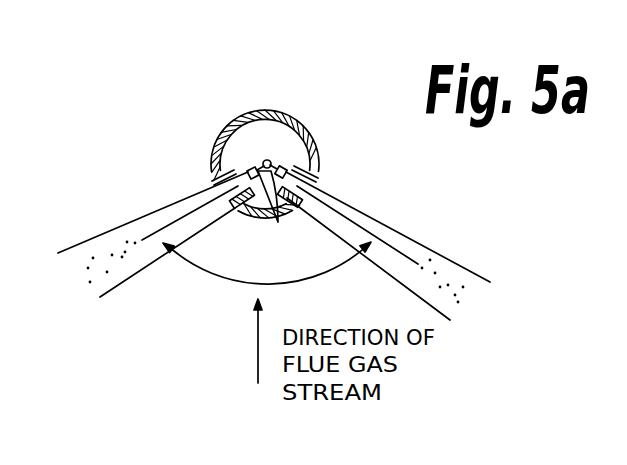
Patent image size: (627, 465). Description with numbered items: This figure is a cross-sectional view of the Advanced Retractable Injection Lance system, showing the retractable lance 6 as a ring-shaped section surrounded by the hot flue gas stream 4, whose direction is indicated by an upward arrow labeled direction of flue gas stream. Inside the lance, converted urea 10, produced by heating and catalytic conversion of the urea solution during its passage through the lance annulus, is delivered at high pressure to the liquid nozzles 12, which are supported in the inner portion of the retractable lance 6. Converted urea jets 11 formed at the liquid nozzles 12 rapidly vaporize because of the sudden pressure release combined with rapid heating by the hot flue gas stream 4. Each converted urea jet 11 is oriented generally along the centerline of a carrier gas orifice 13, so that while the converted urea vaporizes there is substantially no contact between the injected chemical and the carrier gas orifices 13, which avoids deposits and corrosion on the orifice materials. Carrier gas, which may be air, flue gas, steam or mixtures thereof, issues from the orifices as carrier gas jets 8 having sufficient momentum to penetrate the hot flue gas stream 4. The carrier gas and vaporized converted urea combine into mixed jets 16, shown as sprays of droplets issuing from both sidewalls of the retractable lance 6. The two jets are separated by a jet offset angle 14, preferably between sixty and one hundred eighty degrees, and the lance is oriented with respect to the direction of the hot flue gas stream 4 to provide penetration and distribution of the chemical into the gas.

The hot flue gas stream 4 is at (257, 338).
The retractable lance 6 is at (268, 108).
The carrier gas jet 8 is at (410, 231).
The converted urea 10 is at (275, 158).
The converted urea jet 11 is at (353, 215).
The liquid nozzle 12 is at (278, 210).
The carrier gas orifice 13 is at (213, 192).
The jet offset angle 14 is at (333, 272).
The mixed jet 16 is at (121, 245).